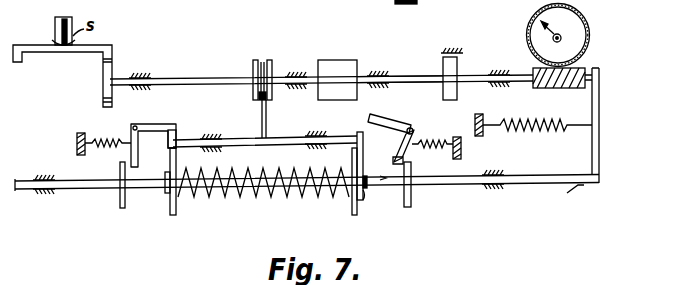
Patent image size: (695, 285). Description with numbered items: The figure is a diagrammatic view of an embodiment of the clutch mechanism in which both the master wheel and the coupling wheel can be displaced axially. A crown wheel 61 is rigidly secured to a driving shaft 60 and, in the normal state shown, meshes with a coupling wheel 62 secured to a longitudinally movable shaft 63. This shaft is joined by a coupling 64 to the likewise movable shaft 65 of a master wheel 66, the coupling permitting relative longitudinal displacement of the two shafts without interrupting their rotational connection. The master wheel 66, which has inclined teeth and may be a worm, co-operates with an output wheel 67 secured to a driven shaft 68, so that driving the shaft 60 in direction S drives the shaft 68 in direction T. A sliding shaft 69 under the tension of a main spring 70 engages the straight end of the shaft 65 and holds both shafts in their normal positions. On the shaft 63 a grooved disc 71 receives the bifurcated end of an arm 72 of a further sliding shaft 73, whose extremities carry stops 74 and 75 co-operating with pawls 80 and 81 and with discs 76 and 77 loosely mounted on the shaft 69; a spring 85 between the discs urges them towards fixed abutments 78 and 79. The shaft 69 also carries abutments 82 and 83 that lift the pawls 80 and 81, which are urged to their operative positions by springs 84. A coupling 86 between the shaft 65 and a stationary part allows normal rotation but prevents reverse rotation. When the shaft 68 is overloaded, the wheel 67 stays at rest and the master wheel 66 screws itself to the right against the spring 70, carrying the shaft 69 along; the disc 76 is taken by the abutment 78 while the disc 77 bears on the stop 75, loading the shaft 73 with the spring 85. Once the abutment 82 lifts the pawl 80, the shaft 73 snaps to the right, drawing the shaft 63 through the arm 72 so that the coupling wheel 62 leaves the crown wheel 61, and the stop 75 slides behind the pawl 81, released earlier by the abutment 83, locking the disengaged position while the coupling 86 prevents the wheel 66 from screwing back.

The driving shaft 60 is at (56, 26).
The crown wheel 61 is at (98, 47).
The coupling wheel 62 is at (103, 89).
The shaft 63 is at (196, 78).
The coupling 64 is at (338, 64).
The shaft 65 is at (405, 76).
The master wheel 66 is at (571, 90).
The output wheel 67 is at (527, 29).
The driven shaft 68 is at (553, 40).
The sliding shaft 69 is at (520, 183).
The main spring 70 is at (536, 127).
The disc 71 is at (256, 62).
The arm 72 is at (262, 110).
The sliding shaft 73 is at (290, 137).
The stop 74 is at (167, 152).
The stop 75 is at (357, 136).
The disc 76 is at (178, 213).
The disc 77 is at (354, 212).
The fixed abutment 78 is at (167, 195).
The fixed abutment 79 is at (363, 192).
The pawl 80 is at (162, 118).
The pawl 81 is at (405, 125).
The abutment 82 is at (117, 199).
The abutment 83 is at (412, 207).
The springs 84 is at (98, 135).
The spring 85 is at (283, 198).
The coupling 86 is at (446, 60).